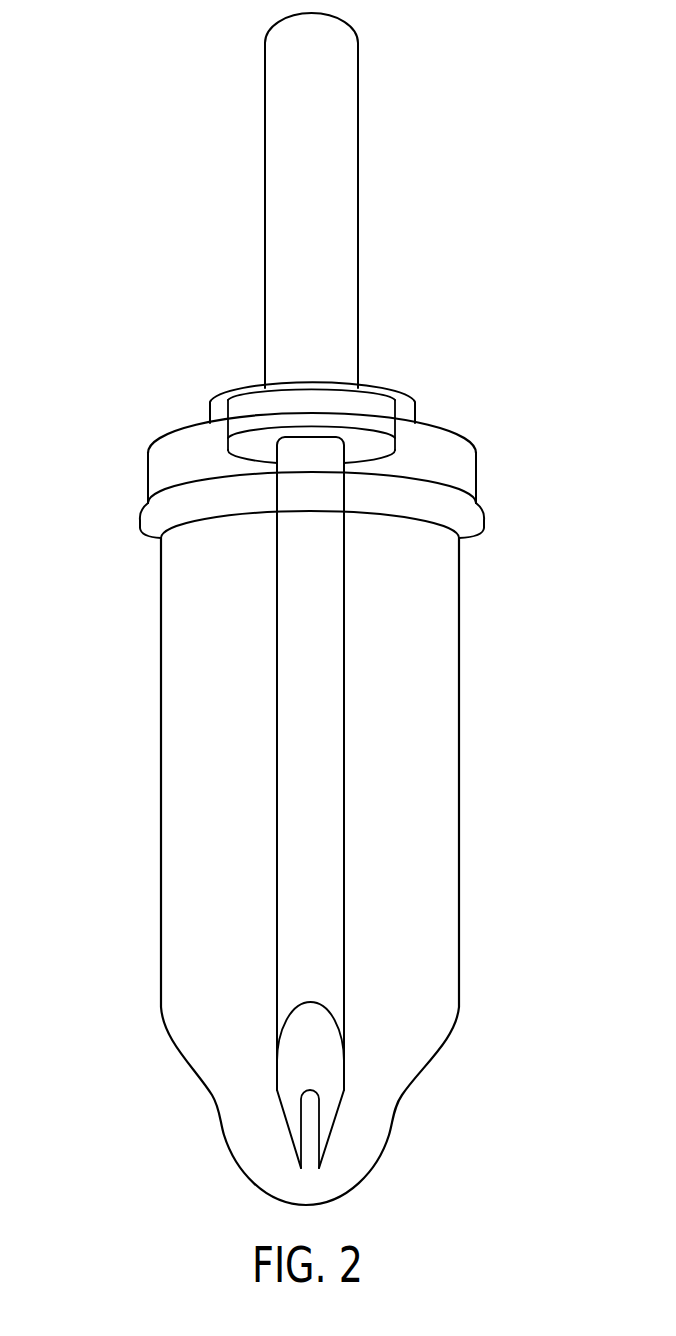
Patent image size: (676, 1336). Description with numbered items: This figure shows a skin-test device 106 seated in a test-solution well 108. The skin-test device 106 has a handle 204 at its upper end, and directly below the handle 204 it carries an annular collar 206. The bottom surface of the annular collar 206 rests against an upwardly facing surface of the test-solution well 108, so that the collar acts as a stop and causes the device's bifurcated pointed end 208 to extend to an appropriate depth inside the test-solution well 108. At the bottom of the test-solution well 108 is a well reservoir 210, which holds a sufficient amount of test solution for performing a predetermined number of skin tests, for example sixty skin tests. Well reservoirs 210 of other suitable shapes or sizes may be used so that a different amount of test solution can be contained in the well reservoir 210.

The skin-test device 106 is at (277, 238).
The test-solution well 108 is at (295, 809).
The handle 204 is at (337, 88).
The annular collar 206 is at (363, 403).
The bifurcated pointed end 208 is at (327, 1082).
The well reservoir 210 is at (237, 1087).